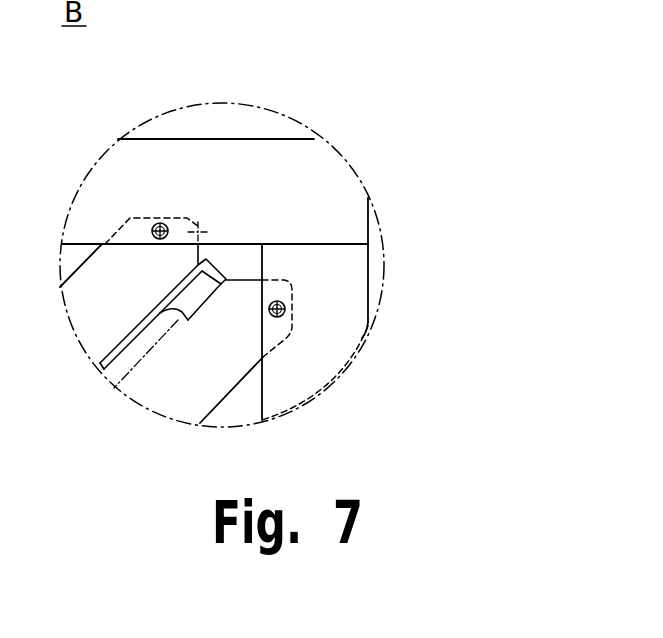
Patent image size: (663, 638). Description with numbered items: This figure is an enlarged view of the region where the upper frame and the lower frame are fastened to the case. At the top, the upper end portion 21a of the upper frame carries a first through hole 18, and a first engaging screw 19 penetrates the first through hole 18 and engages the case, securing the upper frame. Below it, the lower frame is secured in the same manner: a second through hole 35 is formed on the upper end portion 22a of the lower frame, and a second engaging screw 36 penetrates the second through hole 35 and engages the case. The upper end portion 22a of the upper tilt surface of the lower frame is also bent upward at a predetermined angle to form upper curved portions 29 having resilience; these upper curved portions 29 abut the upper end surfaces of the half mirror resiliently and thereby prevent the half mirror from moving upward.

The first through hole 18 is at (170, 227).
The first engaging screw 19 is at (157, 220).
The upper end portion of the upper frame 21a is at (188, 231).
The upper curved portions 29 is at (222, 272).
The upper end portion of the lower frame 22a is at (278, 290).
The second through hole 35 is at (285, 312).
The second engaging screw 36 is at (278, 318).